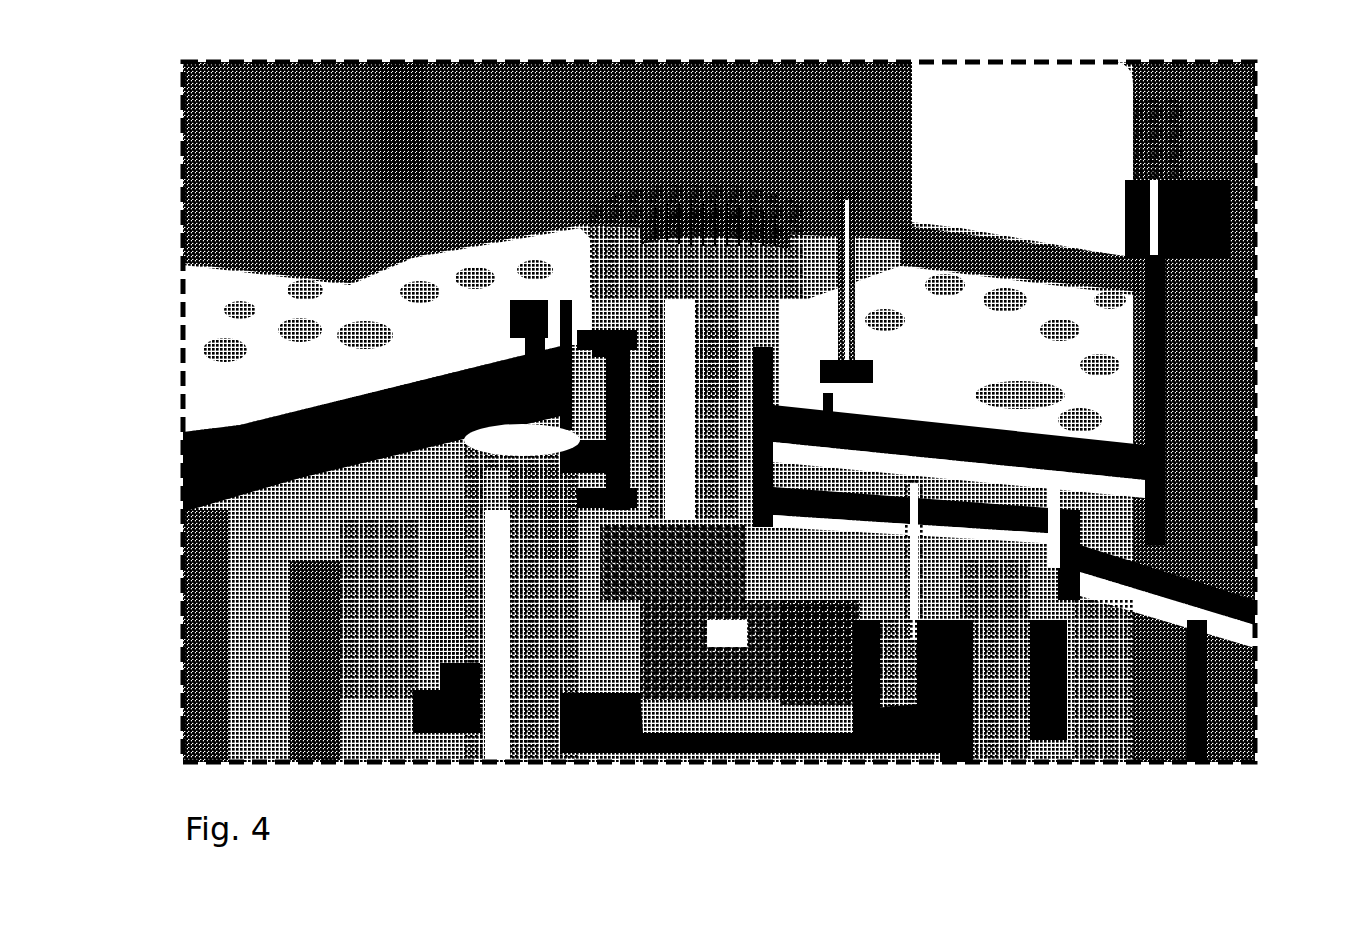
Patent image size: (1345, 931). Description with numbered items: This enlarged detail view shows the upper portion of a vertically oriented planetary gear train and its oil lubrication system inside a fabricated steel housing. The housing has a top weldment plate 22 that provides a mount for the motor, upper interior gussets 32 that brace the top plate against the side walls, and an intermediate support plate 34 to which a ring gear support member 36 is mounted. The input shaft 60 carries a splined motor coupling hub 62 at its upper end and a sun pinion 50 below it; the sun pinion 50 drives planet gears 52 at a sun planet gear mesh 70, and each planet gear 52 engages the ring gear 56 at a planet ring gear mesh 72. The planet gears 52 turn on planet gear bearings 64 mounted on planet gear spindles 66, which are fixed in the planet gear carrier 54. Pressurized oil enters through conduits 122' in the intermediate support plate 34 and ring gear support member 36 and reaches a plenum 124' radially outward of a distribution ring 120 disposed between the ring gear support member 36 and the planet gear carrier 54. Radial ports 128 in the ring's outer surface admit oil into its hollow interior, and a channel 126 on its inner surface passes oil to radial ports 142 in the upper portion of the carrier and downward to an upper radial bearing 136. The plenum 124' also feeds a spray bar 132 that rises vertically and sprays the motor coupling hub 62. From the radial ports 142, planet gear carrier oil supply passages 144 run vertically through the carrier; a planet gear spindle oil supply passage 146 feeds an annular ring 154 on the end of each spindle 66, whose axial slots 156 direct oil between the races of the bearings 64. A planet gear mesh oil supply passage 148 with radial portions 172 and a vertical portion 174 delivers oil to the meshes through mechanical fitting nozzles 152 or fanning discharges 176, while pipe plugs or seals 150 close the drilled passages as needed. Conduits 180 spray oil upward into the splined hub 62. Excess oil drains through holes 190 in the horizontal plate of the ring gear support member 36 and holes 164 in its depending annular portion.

The top weldment plate 22 is at (1237, 172).
The upper interior gussets 32 is at (388, 122).
The intermediate support plate 34 is at (1213, 553).
The ring gear support member 36 is at (250, 446).
The sun pinion 50 is at (693, 700).
The planet gears 52 is at (790, 717).
The planet gear carrier 54 is at (643, 750).
The ring gear 56 is at (318, 733).
The input shaft 60 is at (693, 340).
The motor coupling hub 62 is at (660, 183).
The planet gear bearings 64 is at (447, 653).
The planet gear spindles 66 is at (497, 590).
The sun planet gear mesh 70 is at (747, 587).
The planet ring gear mesh 72 is at (978, 560).
The distribution ring 120 is at (600, 343).
The conduits 122' is at (1049, 470).
The plenum 124' is at (1074, 404).
The channel 126 is at (545, 350).
The radial ports 128 is at (780, 386).
The spray bar 132 is at (860, 195).
The upper radial bearing 136 is at (563, 403).
The radial ports 142 is at (773, 387).
The planet gear carrier oil supply passages 144 is at (620, 437).
The planet gear spindle oil supply passage 146 is at (590, 500).
The planet gear mesh oil supply passage 148 is at (830, 527).
The pipe plugs or seals 150 is at (1080, 522).
The nozzles 152 is at (968, 560).
The annular ring 154 is at (530, 483).
The axial slots 156 is at (550, 530).
The holes 164 is at (1095, 597).
The radial portions 172 is at (893, 620).
The vertical portion 174 is at (913, 520).
The discharges 176 is at (856, 705).
The conduits 180 is at (620, 350).
The holes 190 is at (583, 352).